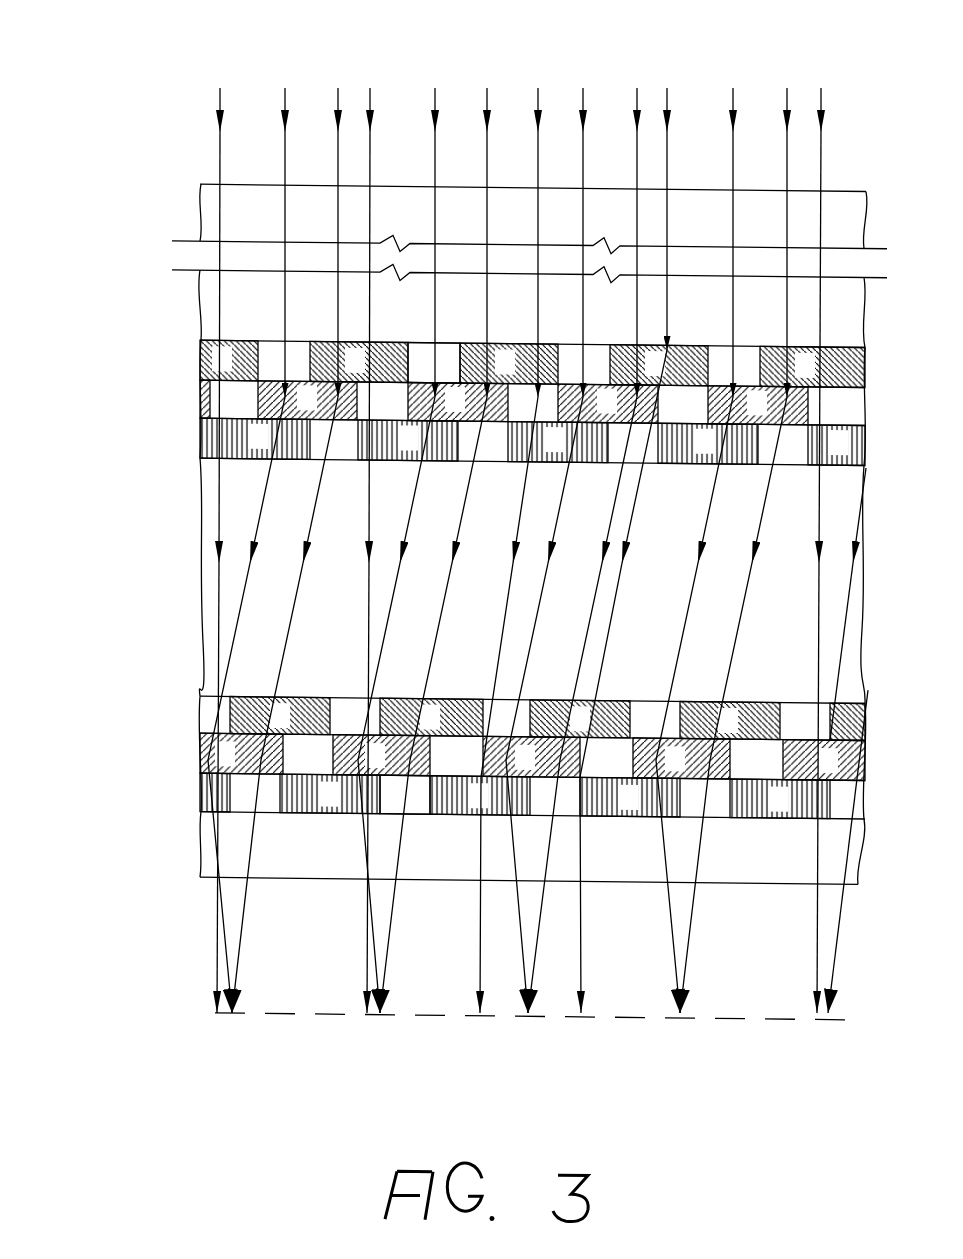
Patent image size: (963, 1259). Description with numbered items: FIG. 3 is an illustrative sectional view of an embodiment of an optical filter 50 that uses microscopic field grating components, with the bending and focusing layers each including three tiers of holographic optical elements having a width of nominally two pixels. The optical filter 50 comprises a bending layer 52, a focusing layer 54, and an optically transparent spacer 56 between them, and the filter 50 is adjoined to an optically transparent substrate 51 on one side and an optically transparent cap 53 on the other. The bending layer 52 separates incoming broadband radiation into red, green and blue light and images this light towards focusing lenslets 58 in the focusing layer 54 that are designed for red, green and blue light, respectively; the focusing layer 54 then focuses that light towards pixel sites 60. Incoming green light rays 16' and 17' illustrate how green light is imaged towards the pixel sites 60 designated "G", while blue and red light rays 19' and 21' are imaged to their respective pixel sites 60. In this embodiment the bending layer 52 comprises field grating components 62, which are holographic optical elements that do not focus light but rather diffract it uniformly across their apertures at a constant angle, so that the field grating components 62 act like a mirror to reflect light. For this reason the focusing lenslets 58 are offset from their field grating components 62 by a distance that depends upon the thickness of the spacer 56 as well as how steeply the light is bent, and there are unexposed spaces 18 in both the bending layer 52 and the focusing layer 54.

The green light ray 16' is at (538, 529).
The green light ray 17' is at (524, 528).
The blue light ray 19' is at (632, 511).
The red light ray 21' is at (541, 511).
The unexposed space 18 is at (414, 352).
The optical filter 50 is at (135, 336).
The optically transparent substrate 51 is at (205, 213).
The bending layer 52 is at (501, 378).
The optically transparent cap 53 is at (204, 848).
The focusing layer 54 is at (477, 785).
The optically transparent spacer 56 is at (207, 597).
The focusing lenslet 58 is at (300, 797).
The pixel site 60 is at (233, 1047).
The field grating component 62 is at (848, 343).